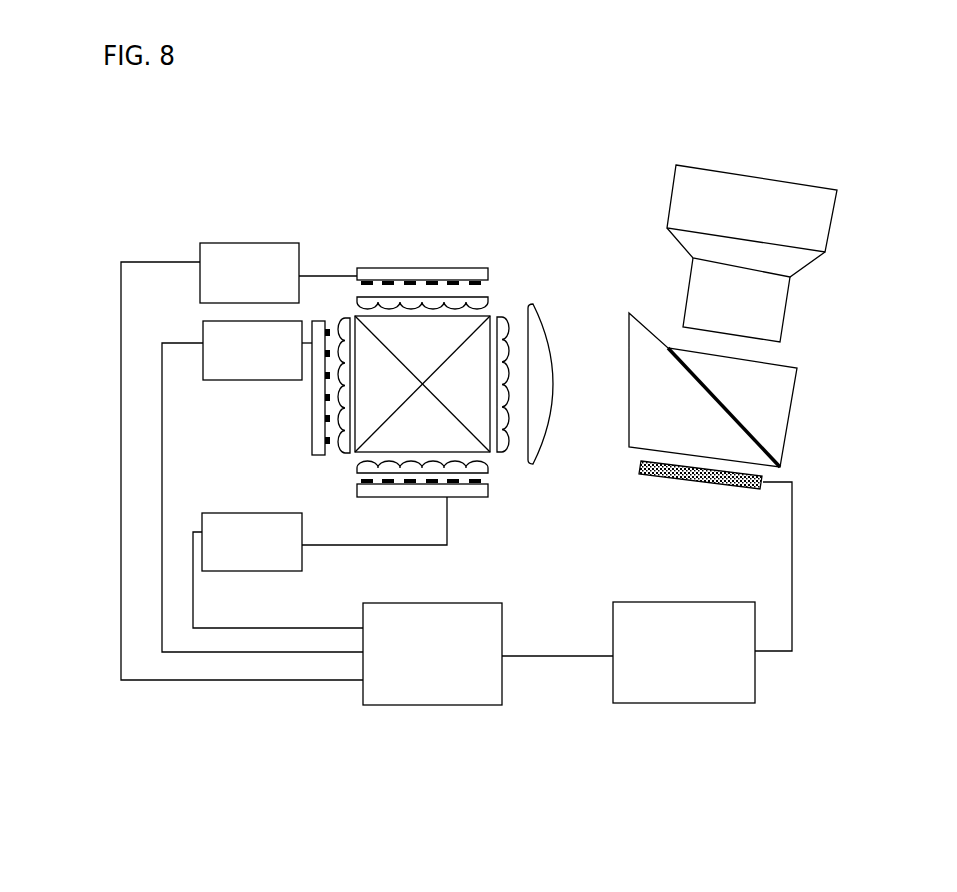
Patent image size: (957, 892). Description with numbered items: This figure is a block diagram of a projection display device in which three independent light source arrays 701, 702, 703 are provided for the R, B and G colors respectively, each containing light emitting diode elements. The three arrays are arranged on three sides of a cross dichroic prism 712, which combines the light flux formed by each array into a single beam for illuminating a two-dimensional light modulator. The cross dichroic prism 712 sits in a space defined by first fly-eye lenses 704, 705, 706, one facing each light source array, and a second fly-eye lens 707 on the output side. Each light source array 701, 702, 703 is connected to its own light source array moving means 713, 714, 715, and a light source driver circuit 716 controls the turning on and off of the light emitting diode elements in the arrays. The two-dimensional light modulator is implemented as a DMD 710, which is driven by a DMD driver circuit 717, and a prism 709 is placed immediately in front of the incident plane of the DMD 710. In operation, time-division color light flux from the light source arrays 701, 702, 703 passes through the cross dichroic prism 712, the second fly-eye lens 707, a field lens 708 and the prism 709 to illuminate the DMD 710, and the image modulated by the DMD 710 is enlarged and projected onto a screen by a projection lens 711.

The light source array 701 is at (475, 268).
The light source array 702 is at (314, 446).
The light source array 703 is at (480, 497).
The first fly-eye lens 704 is at (492, 302).
The first fly-eye lens 705 is at (343, 455).
The first fly-eye lens 706 is at (490, 473).
The second fly-eye lens 707 is at (500, 452).
The field lens 708 is at (549, 378).
The prism 709 is at (629, 313).
The DMD 710 is at (647, 476).
The projection lens 711 is at (793, 184).
The cross dichroic prism 712 is at (422, 384).
The light source array moving means 713 is at (212, 243).
The light source array moving means 714 is at (203, 340).
The light source array moving means 715 is at (302, 560).
The light source driver circuit 716 is at (410, 705).
The DMD driver circuit 717 is at (650, 703).